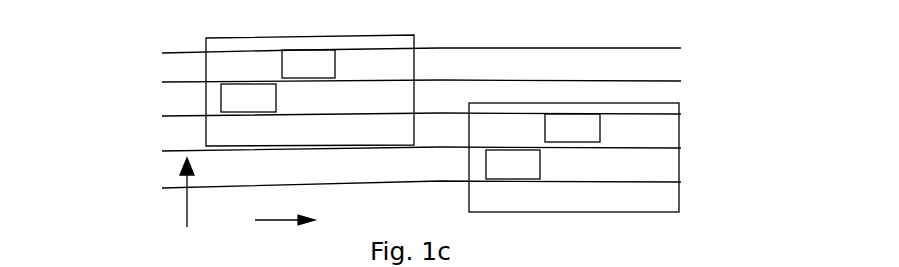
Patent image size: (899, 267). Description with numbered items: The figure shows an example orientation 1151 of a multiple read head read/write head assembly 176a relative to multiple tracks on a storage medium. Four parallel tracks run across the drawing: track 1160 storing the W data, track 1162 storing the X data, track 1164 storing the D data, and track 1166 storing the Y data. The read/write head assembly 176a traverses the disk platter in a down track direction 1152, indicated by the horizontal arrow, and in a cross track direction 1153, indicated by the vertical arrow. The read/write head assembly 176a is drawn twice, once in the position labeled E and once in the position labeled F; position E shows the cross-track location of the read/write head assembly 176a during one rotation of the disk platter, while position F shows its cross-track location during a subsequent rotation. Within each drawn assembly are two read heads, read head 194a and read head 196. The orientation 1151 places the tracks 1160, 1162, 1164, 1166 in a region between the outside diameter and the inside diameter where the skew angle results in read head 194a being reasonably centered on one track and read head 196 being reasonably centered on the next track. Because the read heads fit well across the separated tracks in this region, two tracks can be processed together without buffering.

The example orientation 1151 is at (721, 83).
The down track direction 1152 is at (272, 218).
The cross track direction 1153 is at (180, 205).
The track storing W data 1160 is at (132, 71).
The track storing X data 1162 is at (132, 98).
The track storing D data 1164 is at (135, 144).
The track storing Y data 1166 is at (135, 172).
The read head 194a is at (328, 73).
The read head 196 is at (262, 107).
The read/write head assembly 176a is at (406, 136).